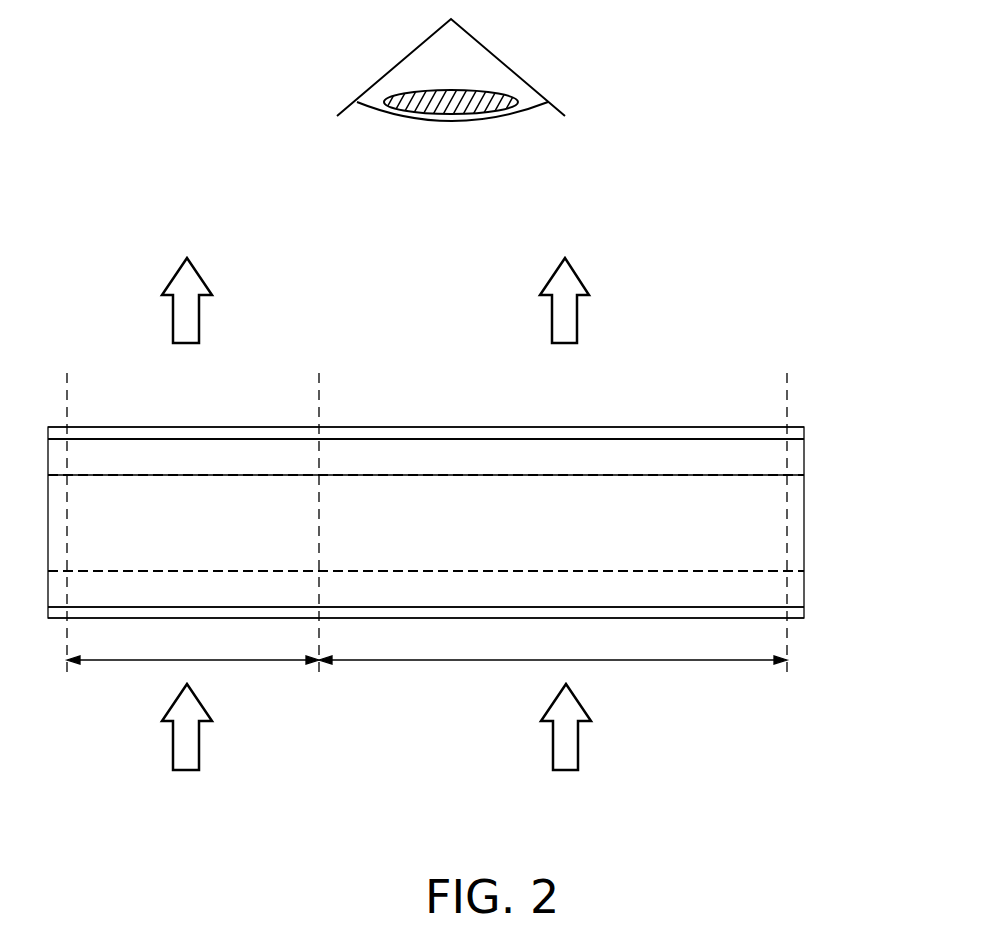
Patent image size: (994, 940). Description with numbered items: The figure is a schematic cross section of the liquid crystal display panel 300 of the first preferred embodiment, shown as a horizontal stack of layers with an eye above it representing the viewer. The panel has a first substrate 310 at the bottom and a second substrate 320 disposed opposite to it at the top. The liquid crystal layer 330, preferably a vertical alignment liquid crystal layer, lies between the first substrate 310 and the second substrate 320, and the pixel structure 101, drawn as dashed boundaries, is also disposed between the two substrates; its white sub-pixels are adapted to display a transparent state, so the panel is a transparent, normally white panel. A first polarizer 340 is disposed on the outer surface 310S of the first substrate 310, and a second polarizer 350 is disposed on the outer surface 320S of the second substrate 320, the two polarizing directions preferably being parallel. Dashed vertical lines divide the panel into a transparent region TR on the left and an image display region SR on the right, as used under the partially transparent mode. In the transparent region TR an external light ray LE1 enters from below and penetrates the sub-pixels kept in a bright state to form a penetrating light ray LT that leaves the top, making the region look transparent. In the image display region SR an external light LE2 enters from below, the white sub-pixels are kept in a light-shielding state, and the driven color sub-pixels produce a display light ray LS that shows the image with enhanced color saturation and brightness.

The liquid crystal display panel 300 is at (785, 248).
The second polarizer 350 is at (628, 433).
The pixel structure 101 is at (718, 473).
The outer surface of the second substrate 320S is at (804, 437).
The second substrate 320 is at (800, 455).
The liquid crystal layer 330 is at (800, 523).
The first substrate 310 is at (800, 590).
The outer surface of the first substrate 310S is at (804, 608).
The first polarizer 340 is at (665, 613).
The penetrating light ray LT is at (199, 315).
The display light ray LS is at (577, 315).
The external light ray LE1 is at (199, 741).
The external light LE2 is at (578, 741).
The transparent region TR is at (193, 647).
The image display region SR is at (553, 647).